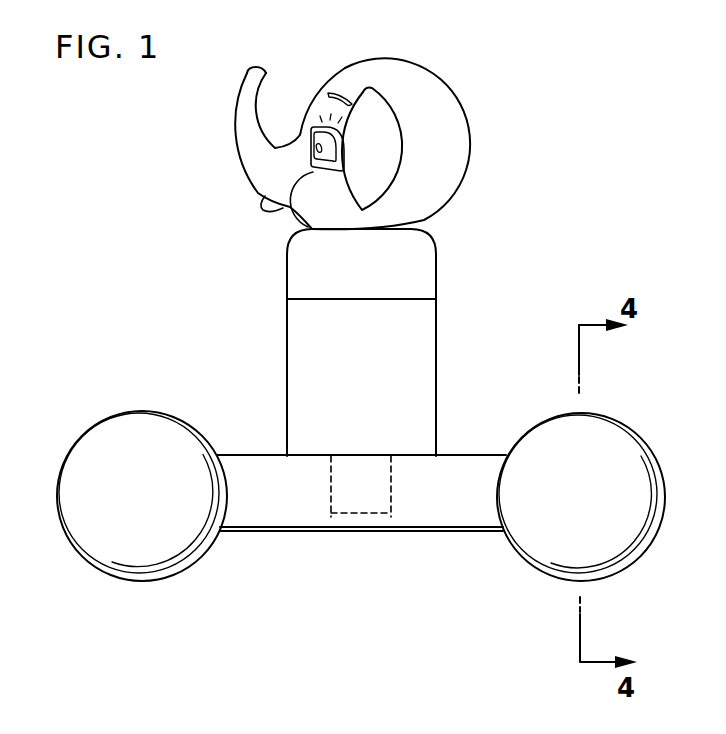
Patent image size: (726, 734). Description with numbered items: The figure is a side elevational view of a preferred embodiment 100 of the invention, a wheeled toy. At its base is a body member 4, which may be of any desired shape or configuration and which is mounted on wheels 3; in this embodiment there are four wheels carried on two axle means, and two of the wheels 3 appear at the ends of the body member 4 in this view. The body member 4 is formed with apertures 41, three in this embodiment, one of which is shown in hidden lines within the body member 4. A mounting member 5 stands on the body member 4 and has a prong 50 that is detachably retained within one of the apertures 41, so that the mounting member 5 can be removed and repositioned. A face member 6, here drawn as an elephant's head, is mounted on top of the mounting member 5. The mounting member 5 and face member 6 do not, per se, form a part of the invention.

The embodiment 100 is at (233, 362).
The face member 6 is at (468, 139).
The mounting member 5 is at (436, 340).
The body member 4 is at (469, 532).
The apertures 41 is at (390, 522).
The prong 50 is at (368, 470).
The wheels 3 is at (122, 410).